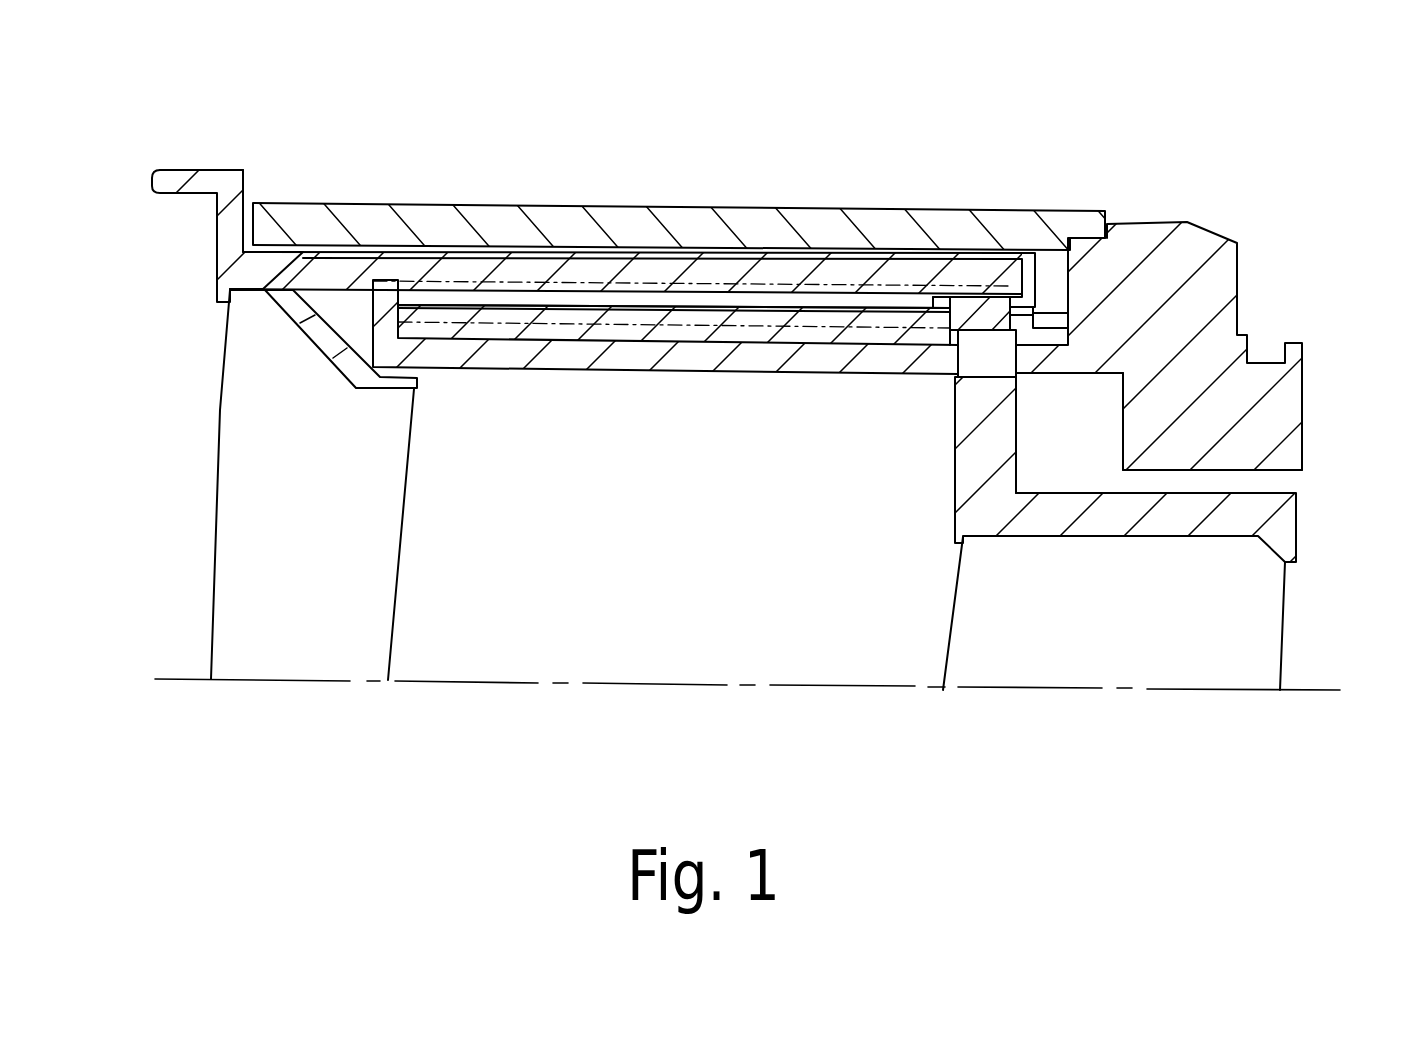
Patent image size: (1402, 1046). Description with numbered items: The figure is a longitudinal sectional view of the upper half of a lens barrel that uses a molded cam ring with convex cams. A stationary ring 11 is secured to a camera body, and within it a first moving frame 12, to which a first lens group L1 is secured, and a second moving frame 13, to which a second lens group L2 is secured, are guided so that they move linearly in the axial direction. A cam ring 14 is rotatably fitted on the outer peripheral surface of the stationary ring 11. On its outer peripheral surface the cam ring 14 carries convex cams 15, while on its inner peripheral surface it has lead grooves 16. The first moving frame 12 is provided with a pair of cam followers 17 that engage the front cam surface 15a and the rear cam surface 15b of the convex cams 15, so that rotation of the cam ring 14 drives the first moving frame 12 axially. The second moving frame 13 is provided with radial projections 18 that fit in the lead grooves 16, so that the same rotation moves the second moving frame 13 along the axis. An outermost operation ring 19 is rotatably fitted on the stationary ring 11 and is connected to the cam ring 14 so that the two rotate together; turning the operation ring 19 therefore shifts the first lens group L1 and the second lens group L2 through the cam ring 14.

The stationary ring 11 is at (1183, 267).
The first moving frame 12 is at (218, 182).
The second moving frame 13 is at (973, 470).
The cam ring 14 is at (732, 322).
The convex cams 15 is at (993, 308).
The front cam surface 15a is at (947, 308).
The rear cam surface 15b is at (1035, 303).
The lead grooves 16 is at (976, 355).
The cam followers 17 is at (943, 300).
The radial projections 18 is at (996, 350).
The operation ring 19 is at (620, 230).
The first lens group L1 is at (298, 653).
The second lens group L2 is at (1087, 670).